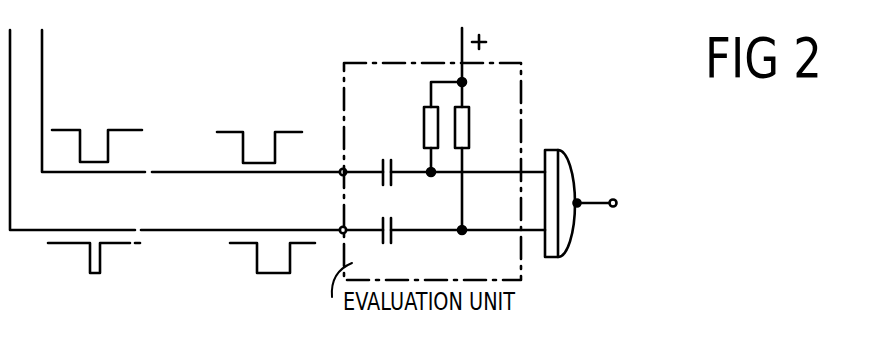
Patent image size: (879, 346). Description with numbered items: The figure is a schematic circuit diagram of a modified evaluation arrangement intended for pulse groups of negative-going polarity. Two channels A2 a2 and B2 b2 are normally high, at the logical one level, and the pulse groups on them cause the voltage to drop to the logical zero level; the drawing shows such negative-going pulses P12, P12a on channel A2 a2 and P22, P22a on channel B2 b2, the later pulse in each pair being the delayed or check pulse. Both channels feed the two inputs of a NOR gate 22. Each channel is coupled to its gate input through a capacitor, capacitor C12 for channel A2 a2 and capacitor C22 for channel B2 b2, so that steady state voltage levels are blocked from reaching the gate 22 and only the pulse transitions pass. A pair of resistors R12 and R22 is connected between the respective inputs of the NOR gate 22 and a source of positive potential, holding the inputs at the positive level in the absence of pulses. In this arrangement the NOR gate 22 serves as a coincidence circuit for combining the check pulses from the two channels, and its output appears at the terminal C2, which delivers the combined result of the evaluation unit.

The channel A2 a2 is at (42, 86).
The channel B2 b2 is at (10, 172).
The first pulse on line a2 P12 is at (97, 123).
The delayed first pulse P12a is at (259, 124).
The second pulse on line b2 P22 is at (87, 267).
The delayed second pulse P22a is at (244, 267).
The capacitor C12 is at (445, 154).
The capacitor C22 is at (445, 247).
The resistor R12 is at (422, 129).
The resistor R22 is at (483, 169).
The NOR gate 22 is at (560, 180).
The output terminal C2 is at (615, 204).